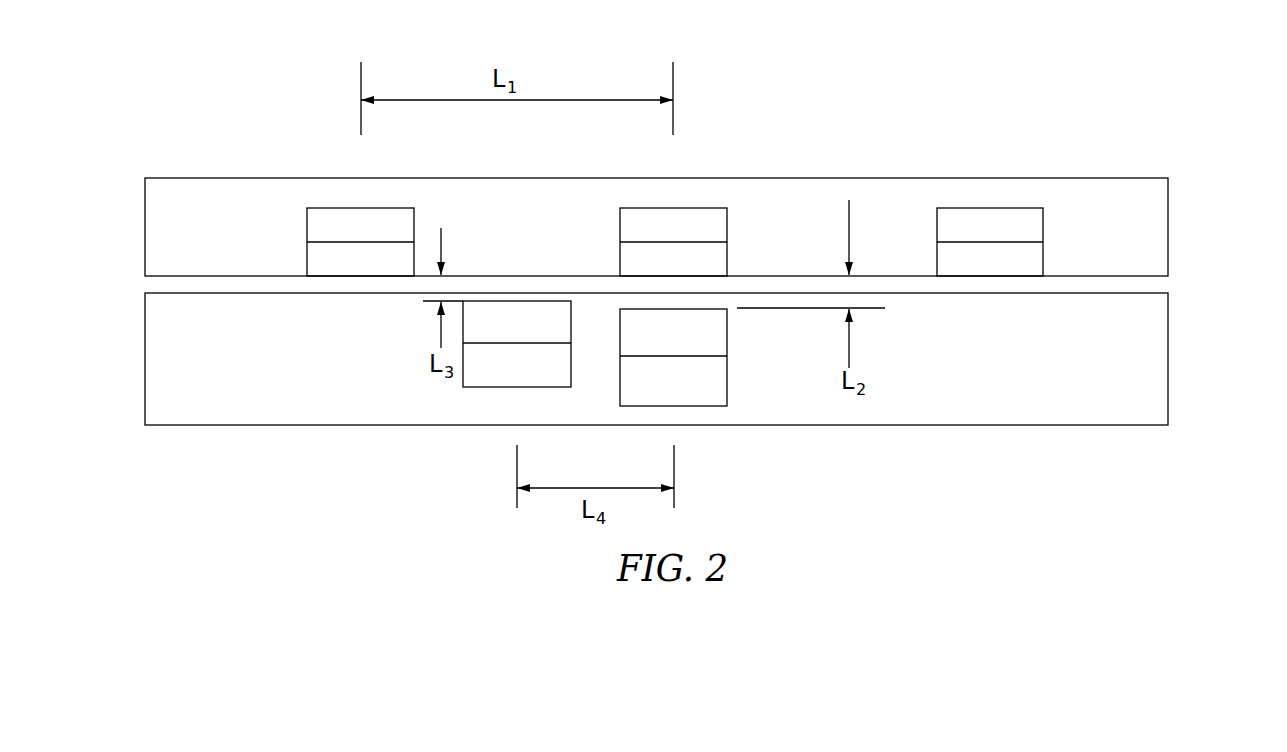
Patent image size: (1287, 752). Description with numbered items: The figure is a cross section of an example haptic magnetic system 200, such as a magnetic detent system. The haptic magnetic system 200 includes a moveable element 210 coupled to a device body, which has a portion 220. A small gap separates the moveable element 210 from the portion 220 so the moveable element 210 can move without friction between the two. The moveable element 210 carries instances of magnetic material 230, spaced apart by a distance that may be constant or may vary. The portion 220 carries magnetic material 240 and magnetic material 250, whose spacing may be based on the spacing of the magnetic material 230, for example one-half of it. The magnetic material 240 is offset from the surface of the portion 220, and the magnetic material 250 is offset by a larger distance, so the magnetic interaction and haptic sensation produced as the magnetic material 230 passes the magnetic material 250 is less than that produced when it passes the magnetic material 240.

The haptic magnetic system 200 is at (1067, 80).
The moveable element 210 is at (1148, 190).
The portion 220 is at (1162, 393).
The magnetic material 230 is at (707, 207).
The magnetic material 240 is at (487, 387).
The magnetic material 250 is at (717, 406).